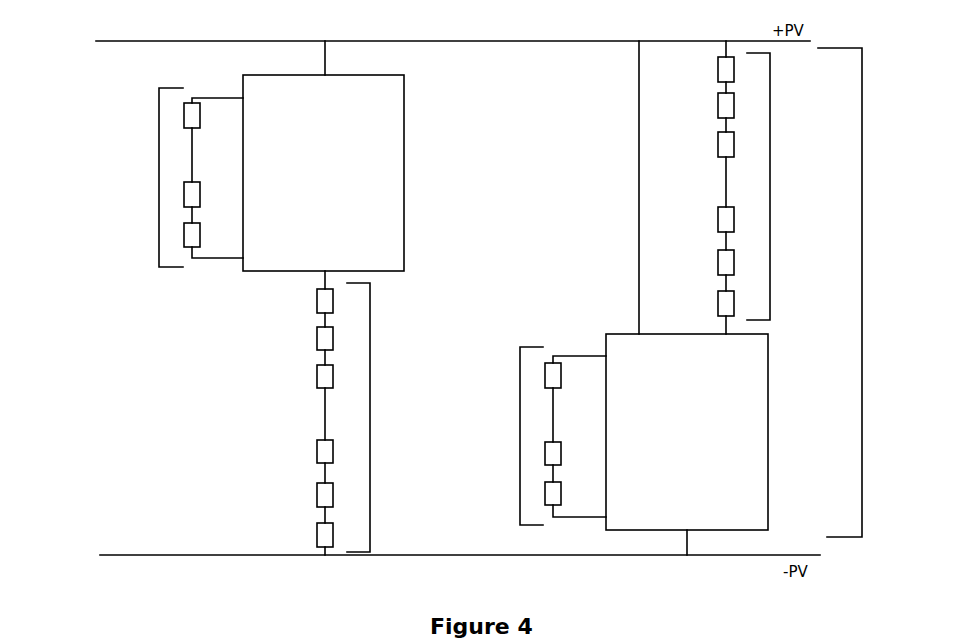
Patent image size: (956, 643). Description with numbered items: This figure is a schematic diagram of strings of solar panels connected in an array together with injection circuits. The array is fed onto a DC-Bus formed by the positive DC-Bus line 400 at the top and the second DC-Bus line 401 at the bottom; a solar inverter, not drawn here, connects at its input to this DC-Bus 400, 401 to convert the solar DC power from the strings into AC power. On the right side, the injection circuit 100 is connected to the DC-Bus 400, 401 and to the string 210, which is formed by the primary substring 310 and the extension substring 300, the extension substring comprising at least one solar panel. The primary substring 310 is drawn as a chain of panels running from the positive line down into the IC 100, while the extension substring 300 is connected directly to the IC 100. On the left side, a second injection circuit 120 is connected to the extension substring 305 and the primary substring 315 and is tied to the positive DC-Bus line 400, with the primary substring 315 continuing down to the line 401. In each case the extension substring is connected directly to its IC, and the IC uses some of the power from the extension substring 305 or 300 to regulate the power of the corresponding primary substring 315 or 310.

The positive DC-Bus line 400 is at (100, 46).
The DC-Bus line 401 is at (108, 558).
The injection circuit 120 is at (404, 182).
The injection circuit 100 is at (768, 443).
The extension substring 305 is at (159, 178).
The primary substring 315 is at (370, 422).
The primary substring 310 is at (770, 192).
The extension substring 300 is at (520, 435).
The string 210 is at (862, 297).